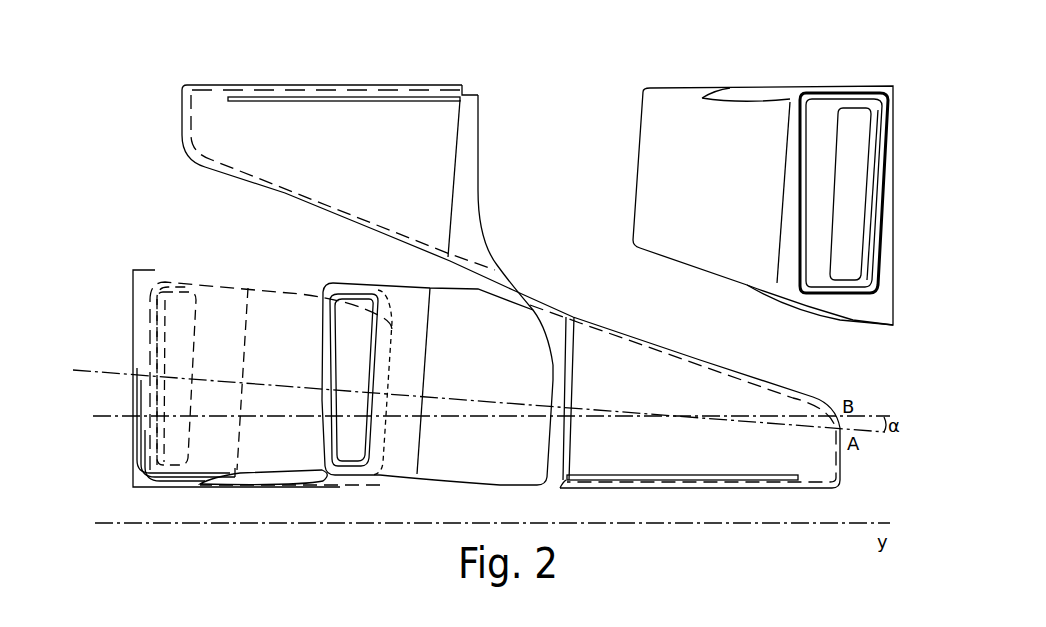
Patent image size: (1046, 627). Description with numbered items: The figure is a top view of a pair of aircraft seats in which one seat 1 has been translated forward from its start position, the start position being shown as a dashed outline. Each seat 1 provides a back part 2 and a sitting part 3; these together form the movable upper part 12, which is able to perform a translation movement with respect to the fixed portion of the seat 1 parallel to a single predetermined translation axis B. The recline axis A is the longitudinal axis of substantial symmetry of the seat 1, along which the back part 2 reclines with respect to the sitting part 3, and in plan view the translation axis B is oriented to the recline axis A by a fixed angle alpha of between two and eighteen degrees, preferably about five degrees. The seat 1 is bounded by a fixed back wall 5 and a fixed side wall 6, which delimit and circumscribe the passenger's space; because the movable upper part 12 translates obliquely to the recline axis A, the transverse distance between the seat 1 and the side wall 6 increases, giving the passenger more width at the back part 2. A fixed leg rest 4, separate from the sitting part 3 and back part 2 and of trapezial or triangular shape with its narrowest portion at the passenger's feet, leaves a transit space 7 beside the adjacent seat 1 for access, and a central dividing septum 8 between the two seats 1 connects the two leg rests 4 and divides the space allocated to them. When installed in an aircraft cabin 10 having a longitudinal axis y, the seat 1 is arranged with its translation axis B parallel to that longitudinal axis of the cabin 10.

The seat 1 is at (812, 59).
The back part 2 is at (397, 300).
The sitting part 3 is at (473, 468).
The leg rest 4 is at (673, 385).
The back wall 5 is at (133, 300).
The side wall 6 is at (200, 488).
The transit space 7 is at (686, 322).
The central dividing septum 8 is at (513, 288).
The aircraft cabin 10 is at (83, 509).
The movable upper part 12 is at (430, 466).